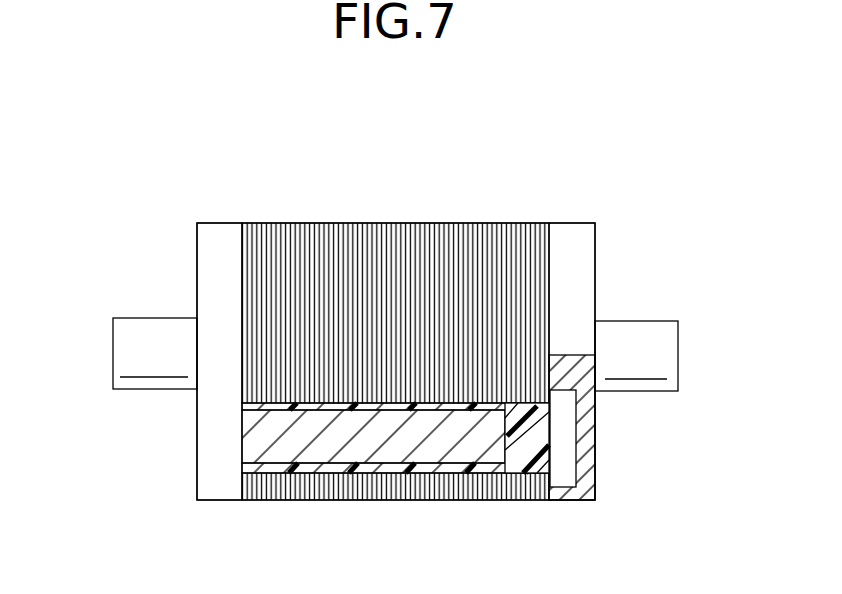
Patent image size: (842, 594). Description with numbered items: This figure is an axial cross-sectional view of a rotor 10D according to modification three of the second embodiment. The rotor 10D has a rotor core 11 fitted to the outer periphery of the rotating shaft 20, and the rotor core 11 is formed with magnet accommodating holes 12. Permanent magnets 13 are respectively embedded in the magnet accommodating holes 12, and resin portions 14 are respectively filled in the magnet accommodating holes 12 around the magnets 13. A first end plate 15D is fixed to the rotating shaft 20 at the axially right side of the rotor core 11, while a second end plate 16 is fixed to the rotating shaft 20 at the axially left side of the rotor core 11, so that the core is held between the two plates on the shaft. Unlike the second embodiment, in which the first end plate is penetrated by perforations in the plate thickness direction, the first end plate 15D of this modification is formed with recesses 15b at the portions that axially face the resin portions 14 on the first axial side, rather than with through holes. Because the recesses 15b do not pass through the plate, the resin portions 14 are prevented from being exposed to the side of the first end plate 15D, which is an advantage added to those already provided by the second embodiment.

The rotor 10D is at (456, 192).
The rotor core 11 is at (357, 235).
The magnet accommodating holes 12 is at (273, 463).
The magnets 13 is at (388, 448).
The resin portions 14 is at (520, 447).
The first end plate 15D is at (582, 275).
The recesses 15b is at (572, 437).
The second end plate 16 is at (222, 235).
The rotating shaft 20 is at (132, 315).